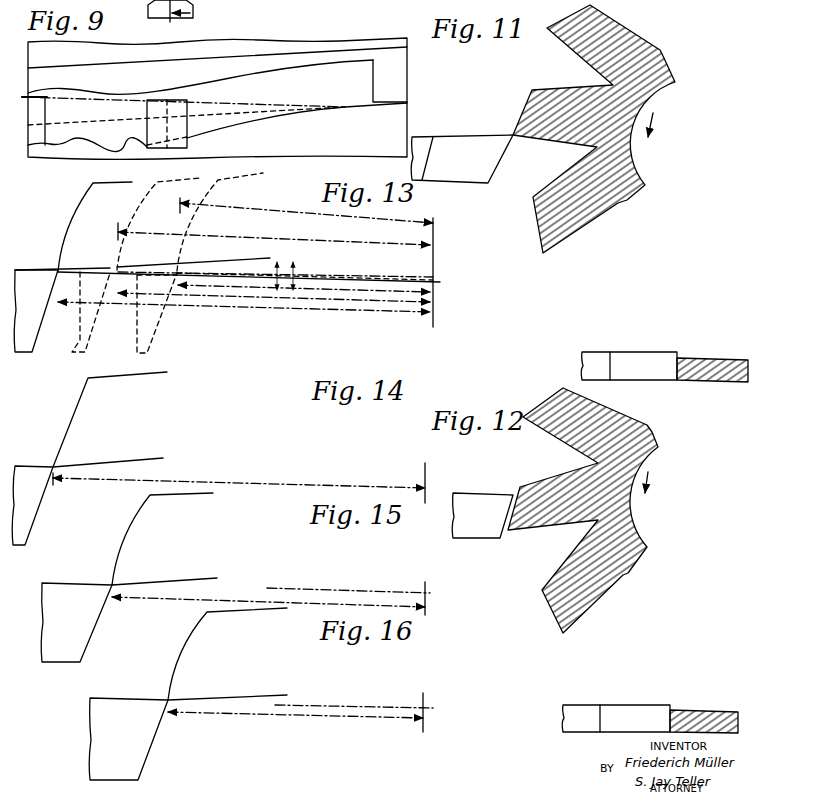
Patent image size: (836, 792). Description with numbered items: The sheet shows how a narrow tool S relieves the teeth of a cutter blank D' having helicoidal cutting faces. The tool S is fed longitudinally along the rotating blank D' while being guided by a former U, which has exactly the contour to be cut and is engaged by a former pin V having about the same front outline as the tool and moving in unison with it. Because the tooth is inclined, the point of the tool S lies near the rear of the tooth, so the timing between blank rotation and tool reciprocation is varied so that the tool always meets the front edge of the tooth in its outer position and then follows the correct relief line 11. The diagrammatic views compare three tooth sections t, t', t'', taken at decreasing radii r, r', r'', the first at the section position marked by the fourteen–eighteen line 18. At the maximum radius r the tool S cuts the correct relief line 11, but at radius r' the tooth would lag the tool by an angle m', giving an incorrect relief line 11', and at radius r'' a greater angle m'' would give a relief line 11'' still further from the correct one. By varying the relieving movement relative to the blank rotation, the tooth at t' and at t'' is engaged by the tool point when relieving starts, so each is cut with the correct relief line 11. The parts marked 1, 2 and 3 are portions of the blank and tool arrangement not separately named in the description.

In FIG. 9, the blade holder / cutter body 1 is at (392, 73).
In FIG. 11, the blade holder / cutter body 1 is at (532, 108).
In FIG. 12, the blade holder / cutter body 1 is at (528, 492).
In FIG. 9, the upper cutter member 2 is at (233, 62).
In FIG. 11, the upper cutter member 2 is at (548, 65).
In FIG. 12, the upper cutter member 2 is at (548, 553).
In FIG. 9, the cutting edge 3 is at (345, 108).
In FIG. 11, the cutting edge 3 is at (533, 143).
In FIG. 12, the cutting edge 3 is at (527, 530).
In FIG. 11, the correct relief line 11 is at (489, 124).
In FIG. 12, the correct relief line 11 is at (492, 550).
In FIG. 13, the correct relief line 11 is at (53, 208).
In FIG. 14, the correct relief line 11 is at (47, 421).
In FIG. 15, the correct relief line 11 is at (126, 498).
In FIG. 16, the correct relief line 11 is at (188, 614).
In FIG. 13, the incorrect relief line 11' is at (139, 180).
In FIG. 13, the incorrect relief line 11'' is at (213, 169).
In FIG. 9, the section line end (line 14—18) 18 is at (181, 13).
In FIG. 9, the tool S is at (190, 133).
In FIG. 11, the tool S is at (470, 172).
In FIG. 12, the tool S is at (480, 533).
In FIG. 13, the tool S is at (25, 325).
In FIG. 14, the tool S is at (27, 523).
In FIG. 15, the tool S is at (80, 643).
In FIG. 16, the tool S is at (135, 752).
In FIG. 9, the cutter blank D' is at (375, 24).
In FIG. 11, the cutter blank D' is at (594, 129).
In FIG. 12, the cutter blank D' is at (590, 510).
In FIG. 11, the former pin V is at (630, 357).
In FIG. 12, the former pin V is at (622, 710).
In FIG. 11, the former U is at (723, 358).
In FIG. 12, the former U is at (697, 712).
In FIG. 13, the tooth section t is at (81, 227).
In FIG. 14, the tooth section t is at (110, 419).
In FIG. 13, the tooth section t' is at (171, 265).
In FIG. 15, the tooth section t' is at (155, 539).
In FIG. 13, the tooth section t'' is at (200, 263).
In FIG. 16, the tooth section t'' is at (218, 654).
In FIG. 13, the cutter radius r is at (244, 308).
In FIG. 14, the cutter radius r is at (239, 483).
In FIG. 13, the cutter radius r' is at (274, 264).
In FIG. 15, the cutter radius r' is at (271, 598).
In FIG. 13, the cutter radius r'' is at (305, 247).
In FIG. 16, the cutter radius r'' is at (300, 712).
In FIG. 13, the separation angle m' is at (279, 269).
In FIG. 13, the separation angle m'' is at (302, 269).